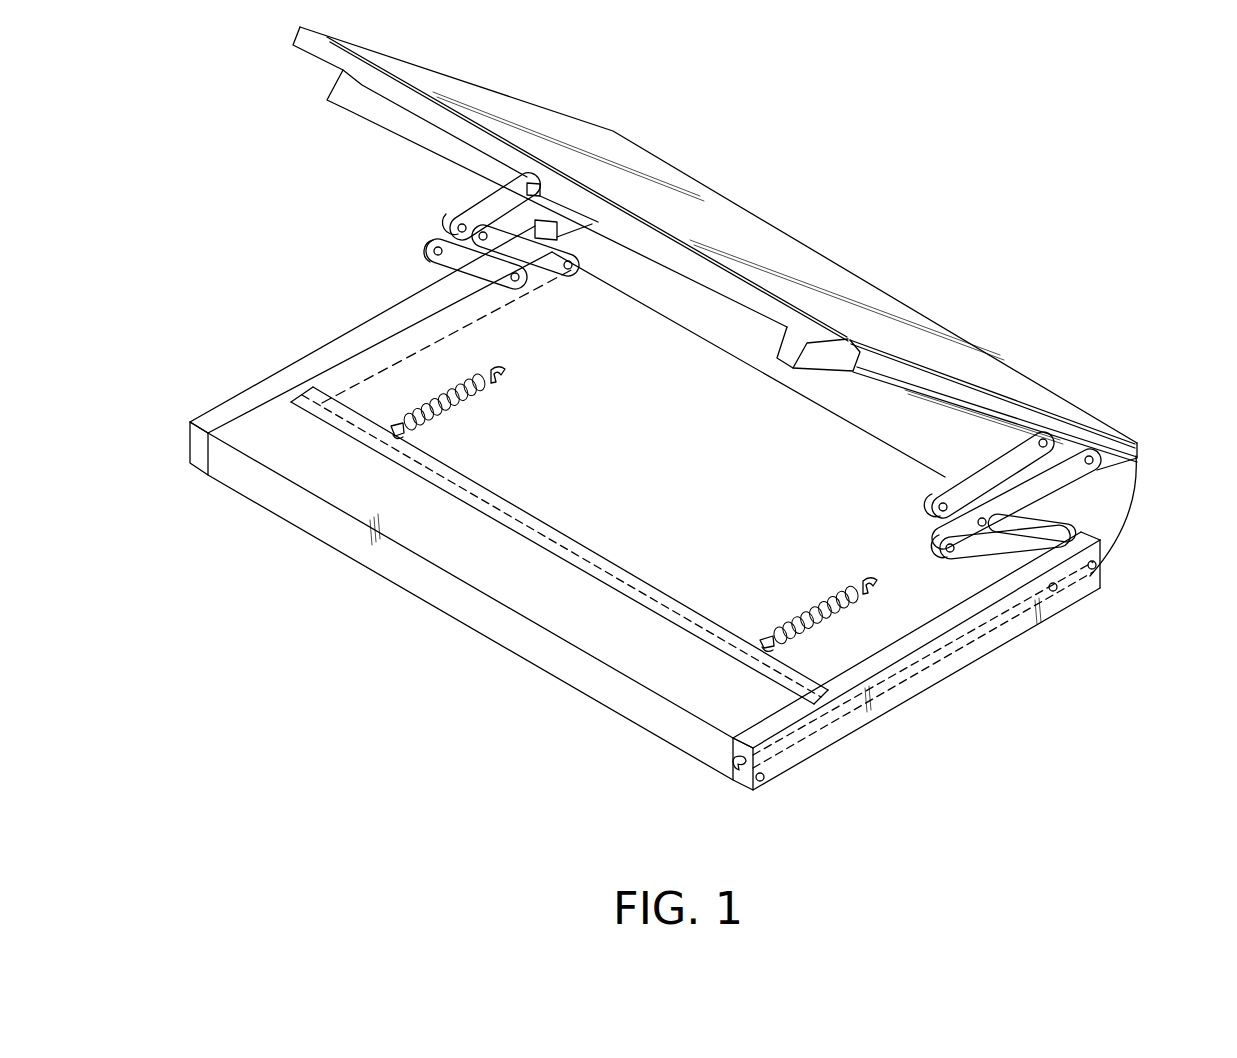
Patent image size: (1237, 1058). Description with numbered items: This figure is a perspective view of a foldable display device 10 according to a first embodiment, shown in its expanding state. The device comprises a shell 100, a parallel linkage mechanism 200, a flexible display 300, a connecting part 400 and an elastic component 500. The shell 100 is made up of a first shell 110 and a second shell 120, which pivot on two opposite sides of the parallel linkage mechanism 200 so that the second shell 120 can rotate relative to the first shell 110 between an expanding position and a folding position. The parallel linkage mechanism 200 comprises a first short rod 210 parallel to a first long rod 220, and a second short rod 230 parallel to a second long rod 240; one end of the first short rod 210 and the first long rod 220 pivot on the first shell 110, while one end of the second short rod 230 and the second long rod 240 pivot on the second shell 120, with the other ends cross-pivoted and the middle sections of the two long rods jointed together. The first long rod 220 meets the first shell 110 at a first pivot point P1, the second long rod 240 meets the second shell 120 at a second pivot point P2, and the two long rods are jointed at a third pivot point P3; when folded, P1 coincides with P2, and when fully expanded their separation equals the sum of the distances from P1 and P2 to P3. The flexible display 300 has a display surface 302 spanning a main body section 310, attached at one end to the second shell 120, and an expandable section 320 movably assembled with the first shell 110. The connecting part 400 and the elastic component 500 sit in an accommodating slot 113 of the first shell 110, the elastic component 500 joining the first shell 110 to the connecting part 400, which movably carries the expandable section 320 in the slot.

The foldable display device 10 is at (1040, 108).
The shell 100 is at (313, 165).
The first shell 110 is at (410, 300).
The accommodating slot 113 is at (420, 380).
The second shell 120 is at (440, 115).
The parallel linkage mechanism 200 is at (578, 300).
The first short rod 210 is at (1017, 606).
The first long rod 220 is at (1070, 525).
The second short rod 230 is at (1060, 662).
The second long rod 240 is at (1040, 495).
The first pivot point P1 is at (1097, 567).
The second pivot point P2 is at (1100, 462).
The third pivot point P3 is at (1098, 596).
The flexible display 300 is at (632, 838).
The display surface 302 is at (760, 243).
The main body section 310 is at (807, 742).
The expandable section 320 is at (680, 668).
The connecting part 400 is at (540, 530).
The elastic component 500 is at (478, 390).